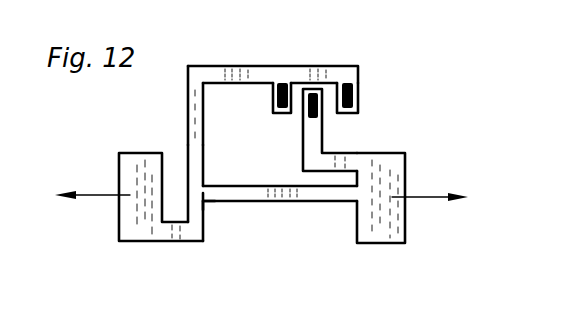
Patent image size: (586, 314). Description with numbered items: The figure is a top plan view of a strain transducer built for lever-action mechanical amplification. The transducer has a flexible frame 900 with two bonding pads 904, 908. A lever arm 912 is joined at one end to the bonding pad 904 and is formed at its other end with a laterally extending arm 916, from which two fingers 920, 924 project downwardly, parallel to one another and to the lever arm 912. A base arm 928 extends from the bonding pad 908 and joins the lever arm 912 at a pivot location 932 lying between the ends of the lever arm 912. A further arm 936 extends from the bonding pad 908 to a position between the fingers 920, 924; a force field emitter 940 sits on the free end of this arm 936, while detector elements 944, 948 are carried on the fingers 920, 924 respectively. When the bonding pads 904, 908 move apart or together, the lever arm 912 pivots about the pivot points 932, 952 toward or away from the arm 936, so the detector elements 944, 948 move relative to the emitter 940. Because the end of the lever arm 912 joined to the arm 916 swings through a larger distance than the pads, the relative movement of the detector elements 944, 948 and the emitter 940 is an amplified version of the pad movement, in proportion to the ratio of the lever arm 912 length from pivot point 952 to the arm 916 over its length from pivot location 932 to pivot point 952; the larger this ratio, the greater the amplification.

The flexible frame 900 is at (430, 164).
The bonding pad 904 is at (135, 230).
The bonding pad 908 is at (383, 230).
The lever arm 912 is at (192, 108).
The laterally extending arm 916 is at (224, 73).
The finger 920 is at (272, 103).
The finger 924 is at (358, 102).
The base arm 928 is at (312, 190).
The pivot location 932 is at (207, 205).
The arm 936 is at (310, 137).
The force field emitter 940 is at (318, 115).
The detector element 944 is at (281, 84).
The detector element 948 is at (352, 92).
The pivot point 952 is at (197, 228).